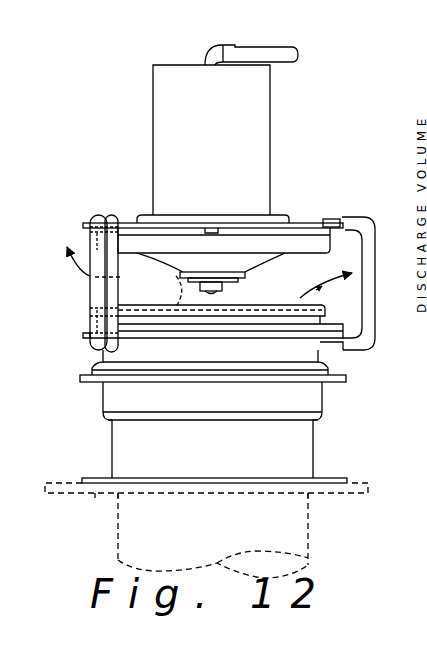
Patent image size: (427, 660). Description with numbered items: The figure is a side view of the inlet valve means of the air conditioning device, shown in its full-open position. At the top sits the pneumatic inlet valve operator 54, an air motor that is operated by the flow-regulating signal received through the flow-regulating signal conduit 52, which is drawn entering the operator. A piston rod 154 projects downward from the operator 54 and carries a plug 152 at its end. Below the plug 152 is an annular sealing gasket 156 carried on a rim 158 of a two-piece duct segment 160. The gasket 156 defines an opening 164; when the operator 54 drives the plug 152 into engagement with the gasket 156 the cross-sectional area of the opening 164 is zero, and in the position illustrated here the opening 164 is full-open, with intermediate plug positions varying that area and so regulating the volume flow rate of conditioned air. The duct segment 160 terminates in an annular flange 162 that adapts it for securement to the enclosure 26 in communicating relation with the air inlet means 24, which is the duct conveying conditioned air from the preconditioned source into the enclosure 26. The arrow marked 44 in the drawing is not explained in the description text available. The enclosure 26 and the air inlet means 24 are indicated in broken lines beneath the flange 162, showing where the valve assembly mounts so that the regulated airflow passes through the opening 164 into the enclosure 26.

The air inlet means 24 is at (117, 538).
The enclosure 26 is at (94, 497).
The discharge valve assembly 44 is at (301, 121).
The flow-regulating signal conduit 52 is at (264, 46).
The pneumatic inlet valve operator 54 is at (153, 123).
The plug 152 is at (250, 278).
The piston rod 154 is at (240, 184).
The annular sealing gasket 156 is at (206, 322).
The rim 158 is at (174, 284).
The two-piece duct segment 160 is at (324, 399).
The annular flange 162 is at (335, 478).
The opening 164 is at (286, 301).